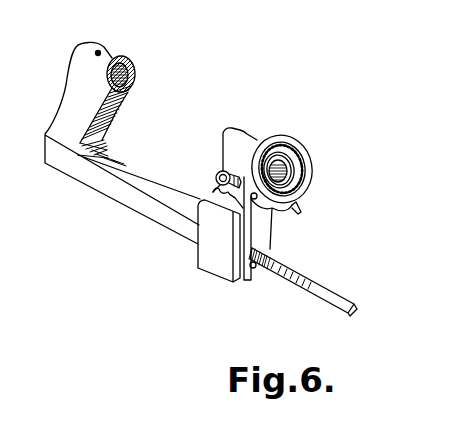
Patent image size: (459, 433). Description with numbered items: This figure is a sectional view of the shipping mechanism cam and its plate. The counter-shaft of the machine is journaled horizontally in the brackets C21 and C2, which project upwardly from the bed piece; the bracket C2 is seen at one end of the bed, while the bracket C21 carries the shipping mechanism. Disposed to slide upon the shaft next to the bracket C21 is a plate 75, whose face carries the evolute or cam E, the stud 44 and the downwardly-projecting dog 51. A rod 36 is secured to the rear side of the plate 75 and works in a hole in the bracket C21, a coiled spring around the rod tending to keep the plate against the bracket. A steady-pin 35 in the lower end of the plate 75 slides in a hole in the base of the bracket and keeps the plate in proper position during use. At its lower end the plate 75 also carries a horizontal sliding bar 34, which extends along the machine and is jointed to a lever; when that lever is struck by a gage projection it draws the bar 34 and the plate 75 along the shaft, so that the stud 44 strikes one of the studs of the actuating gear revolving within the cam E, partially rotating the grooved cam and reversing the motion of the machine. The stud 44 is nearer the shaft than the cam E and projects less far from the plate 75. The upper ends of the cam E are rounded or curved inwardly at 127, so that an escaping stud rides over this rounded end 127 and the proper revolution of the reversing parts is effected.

The bracket C2 is at (90, 100).
The bracket C21 is at (235, 204).
The rod 36 is at (218, 179).
The stud 44 is at (289, 152).
The rounded end of cam 127 is at (306, 145).
The cam E is at (306, 173).
The dog 51 is at (296, 213).
The plate 75 is at (271, 222).
The horizontal sliding bar 34 is at (342, 290).
The steady-pin 35 is at (253, 269).